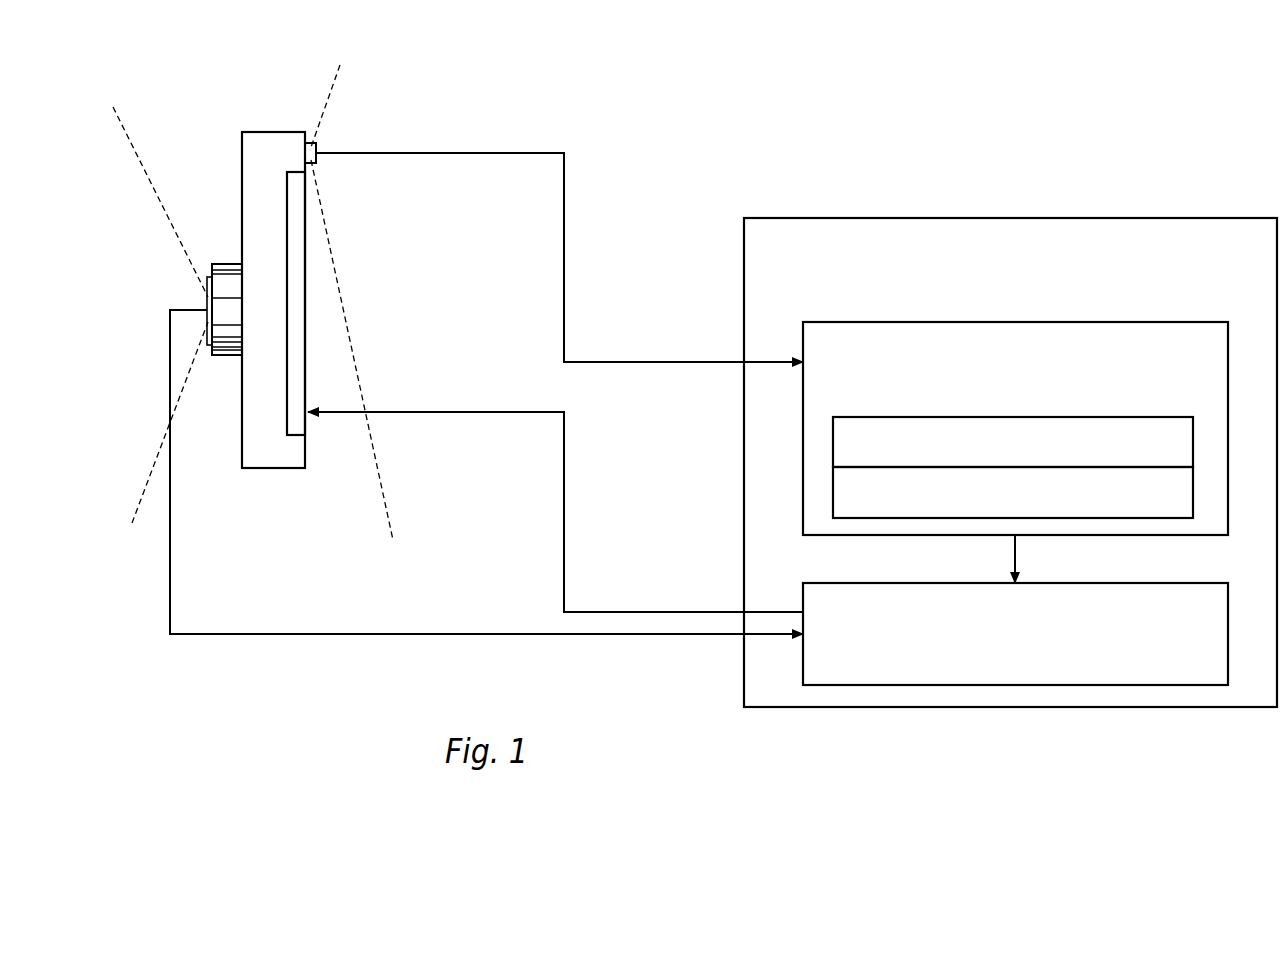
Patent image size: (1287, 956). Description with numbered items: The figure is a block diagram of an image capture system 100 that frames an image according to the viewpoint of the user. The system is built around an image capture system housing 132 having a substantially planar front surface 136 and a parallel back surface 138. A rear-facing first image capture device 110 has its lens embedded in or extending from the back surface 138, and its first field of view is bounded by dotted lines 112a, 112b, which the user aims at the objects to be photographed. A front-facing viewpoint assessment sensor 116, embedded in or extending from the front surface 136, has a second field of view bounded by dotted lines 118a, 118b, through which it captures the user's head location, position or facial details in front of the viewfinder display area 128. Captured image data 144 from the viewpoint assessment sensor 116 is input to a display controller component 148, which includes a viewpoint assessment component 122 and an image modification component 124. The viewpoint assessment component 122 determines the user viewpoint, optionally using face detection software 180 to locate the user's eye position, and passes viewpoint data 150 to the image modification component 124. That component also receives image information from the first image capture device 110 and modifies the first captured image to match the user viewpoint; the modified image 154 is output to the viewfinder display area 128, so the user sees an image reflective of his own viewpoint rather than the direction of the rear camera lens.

The image capture system 100 is at (833, 145).
The first image capture device 110 is at (228, 264).
The dotted line 112a is at (146, 187).
The dotted line 112b is at (152, 438).
The viewpoint assessment sensor 116 is at (312, 142).
The dotted line 118a is at (333, 93).
The dotted line 118b is at (390, 522).
The viewpoint assessment component 122 is at (1015, 428).
The image modification component 124 is at (1015, 634).
The viewfinder display area 128 is at (298, 320).
The image capture system housing 132 is at (267, 468).
The front surface 136 is at (307, 453).
The back surface 138 is at (242, 443).
The captured image data 144 is at (564, 272).
The display controller component 148 is at (307, 634).
The user viewpoint data 150 is at (1015, 556).
The modified image 154 is at (564, 515).
The face detection software 180 is at (1195, 433).